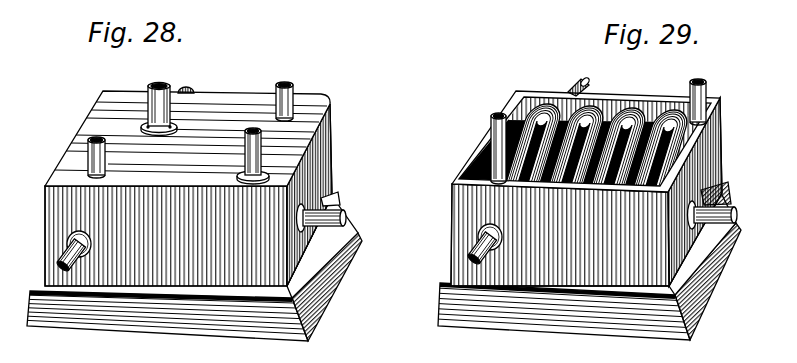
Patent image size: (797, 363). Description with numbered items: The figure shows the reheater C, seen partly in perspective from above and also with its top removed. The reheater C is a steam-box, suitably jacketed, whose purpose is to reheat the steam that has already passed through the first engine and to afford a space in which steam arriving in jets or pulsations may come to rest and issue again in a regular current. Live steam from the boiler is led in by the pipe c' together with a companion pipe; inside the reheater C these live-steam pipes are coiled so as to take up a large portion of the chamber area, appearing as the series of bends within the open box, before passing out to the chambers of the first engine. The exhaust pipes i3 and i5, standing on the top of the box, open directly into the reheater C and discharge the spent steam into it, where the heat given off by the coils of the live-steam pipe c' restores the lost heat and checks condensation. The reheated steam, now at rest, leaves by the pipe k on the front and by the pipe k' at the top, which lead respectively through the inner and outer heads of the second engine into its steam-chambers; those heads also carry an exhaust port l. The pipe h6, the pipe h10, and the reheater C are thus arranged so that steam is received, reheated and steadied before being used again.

In FIG. 28, the reheater C is at (194, 216).
In FIG. 29, the reheater C is at (590, 244).
In FIG. 28, the exhaust pipe i5 is at (159, 102).
In FIG. 28, the steam outlet pipe k' is at (191, 80).
In FIG. 29, the steam outlet pipe k' is at (579, 80).
In FIG. 28, the live-steam pipe c' is at (292, 98).
In FIG. 29, the live-steam pipe c' is at (703, 94).
In FIG. 28, the pipe on casing top h6 is at (87, 157).
In FIG. 28, the exhaust pipe i3 is at (250, 156).
In FIG. 28, the steam outlet pipe k is at (73, 252).
In FIG. 29, the steam outlet pipe k is at (484, 249).
In FIG. 29, the pipe inside casing h10 is at (490, 140).
In FIG. 29, the exhaust port l is at (714, 178).